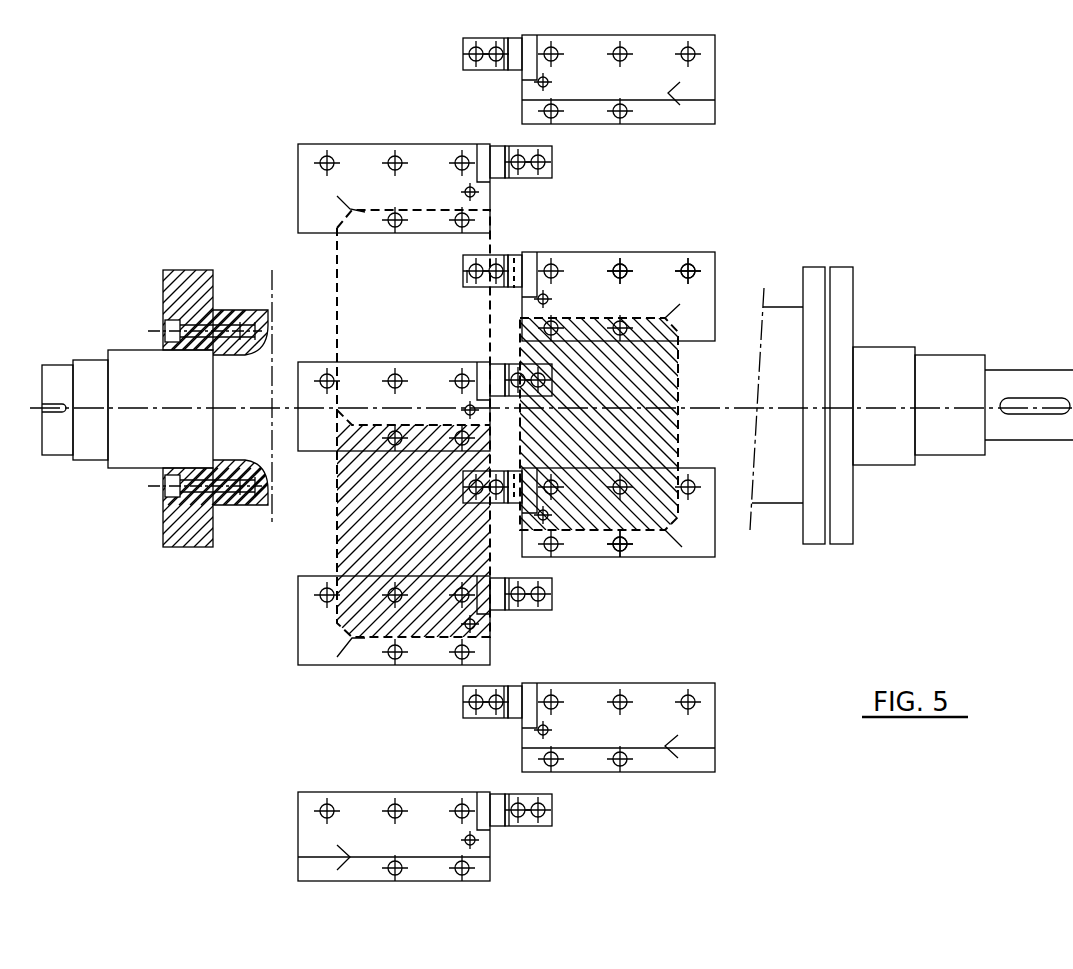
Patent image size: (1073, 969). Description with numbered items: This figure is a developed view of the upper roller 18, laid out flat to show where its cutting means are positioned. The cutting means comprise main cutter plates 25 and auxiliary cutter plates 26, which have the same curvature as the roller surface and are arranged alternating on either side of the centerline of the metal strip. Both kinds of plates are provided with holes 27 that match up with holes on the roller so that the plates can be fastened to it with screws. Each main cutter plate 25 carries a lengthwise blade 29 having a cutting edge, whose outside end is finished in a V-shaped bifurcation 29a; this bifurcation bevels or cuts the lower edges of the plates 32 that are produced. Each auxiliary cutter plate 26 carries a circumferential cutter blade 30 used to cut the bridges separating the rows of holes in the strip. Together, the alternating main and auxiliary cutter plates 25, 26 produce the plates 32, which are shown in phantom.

The upper roller 18 is at (1005, 380).
The main cutter plates 25 is at (712, 67).
The auxiliary cutter plates 26 is at (466, 50).
The holes 27 is at (690, 265).
The lengthwise blade 29 is at (365, 212).
The V-shaped bifurcation 29a is at (684, 110).
The circumferential cutter blade 30 is at (522, 266).
The plates 32 is at (640, 420).